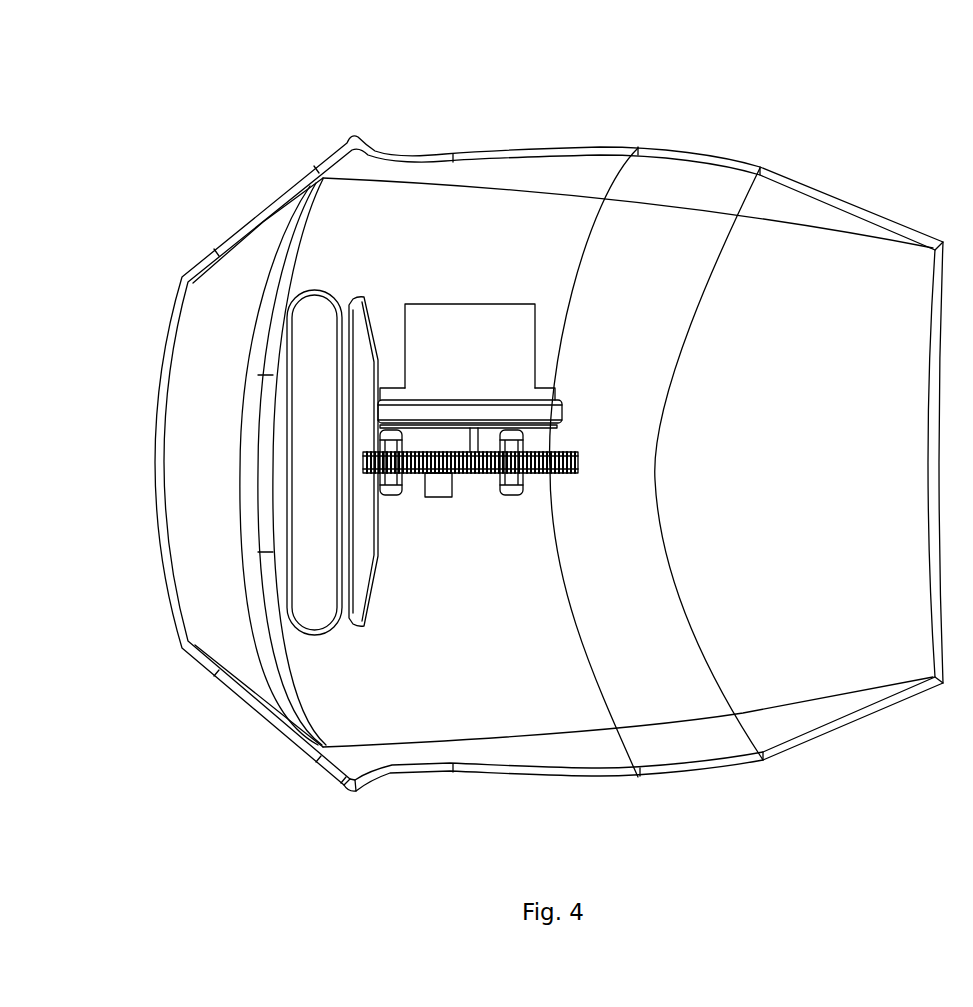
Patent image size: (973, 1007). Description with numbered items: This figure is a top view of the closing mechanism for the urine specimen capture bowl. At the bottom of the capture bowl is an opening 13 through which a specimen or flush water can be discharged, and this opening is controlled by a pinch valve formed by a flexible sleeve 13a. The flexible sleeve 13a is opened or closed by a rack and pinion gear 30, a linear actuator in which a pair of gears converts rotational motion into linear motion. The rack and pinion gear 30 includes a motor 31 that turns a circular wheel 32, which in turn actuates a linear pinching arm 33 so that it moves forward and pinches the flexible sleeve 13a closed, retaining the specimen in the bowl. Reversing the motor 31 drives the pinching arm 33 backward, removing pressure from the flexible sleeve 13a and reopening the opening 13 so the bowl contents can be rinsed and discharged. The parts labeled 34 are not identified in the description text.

The opening 13 is at (318, 403).
The flexible sleeve 13a is at (337, 480).
The rack and pinion gear 30 is at (443, 327).
The motor 31 is at (498, 340).
The circular wheel 32 is at (443, 497).
The linear pinching arm 33 is at (479, 474).
The bearing 34 is at (388, 477).